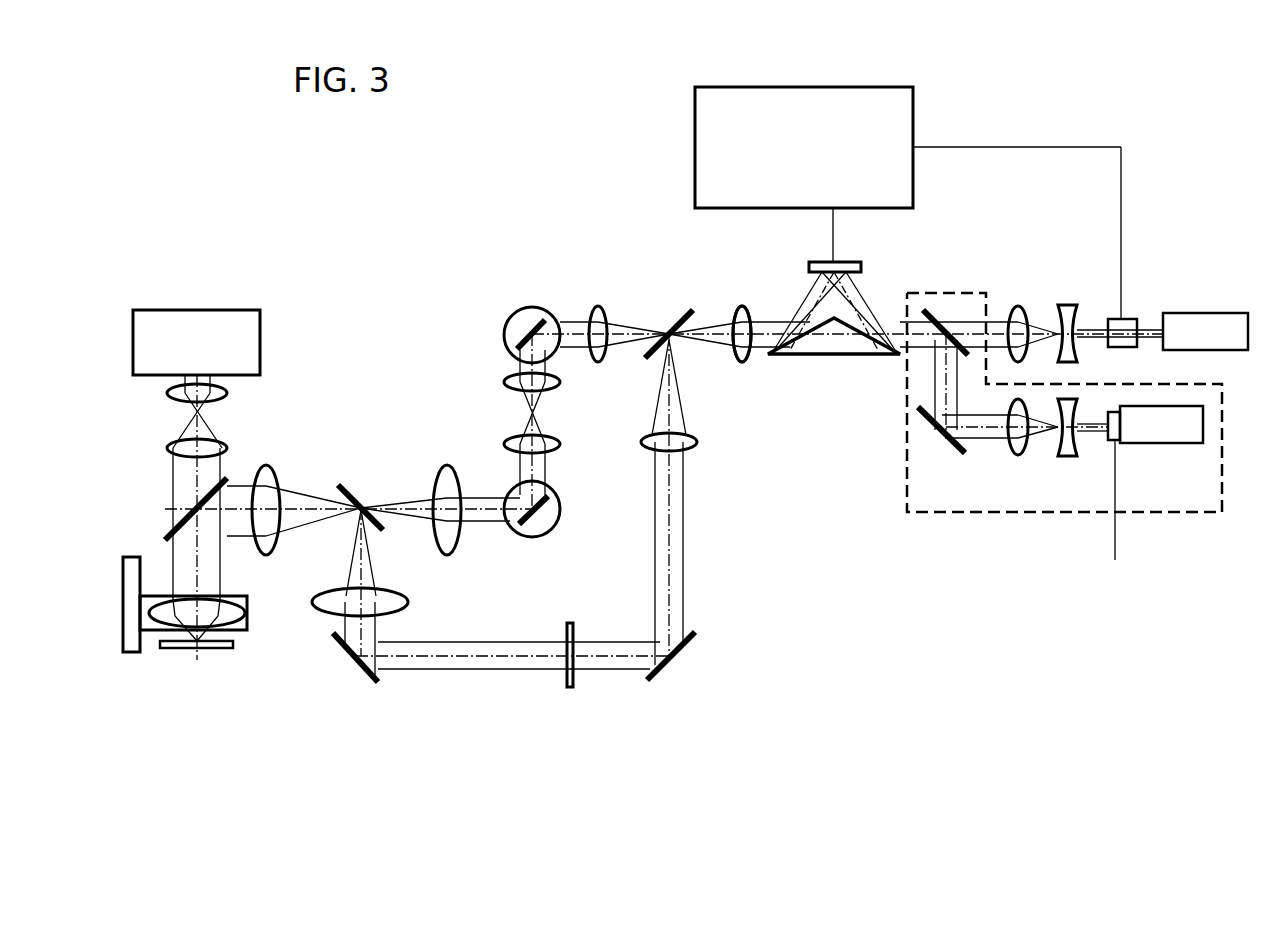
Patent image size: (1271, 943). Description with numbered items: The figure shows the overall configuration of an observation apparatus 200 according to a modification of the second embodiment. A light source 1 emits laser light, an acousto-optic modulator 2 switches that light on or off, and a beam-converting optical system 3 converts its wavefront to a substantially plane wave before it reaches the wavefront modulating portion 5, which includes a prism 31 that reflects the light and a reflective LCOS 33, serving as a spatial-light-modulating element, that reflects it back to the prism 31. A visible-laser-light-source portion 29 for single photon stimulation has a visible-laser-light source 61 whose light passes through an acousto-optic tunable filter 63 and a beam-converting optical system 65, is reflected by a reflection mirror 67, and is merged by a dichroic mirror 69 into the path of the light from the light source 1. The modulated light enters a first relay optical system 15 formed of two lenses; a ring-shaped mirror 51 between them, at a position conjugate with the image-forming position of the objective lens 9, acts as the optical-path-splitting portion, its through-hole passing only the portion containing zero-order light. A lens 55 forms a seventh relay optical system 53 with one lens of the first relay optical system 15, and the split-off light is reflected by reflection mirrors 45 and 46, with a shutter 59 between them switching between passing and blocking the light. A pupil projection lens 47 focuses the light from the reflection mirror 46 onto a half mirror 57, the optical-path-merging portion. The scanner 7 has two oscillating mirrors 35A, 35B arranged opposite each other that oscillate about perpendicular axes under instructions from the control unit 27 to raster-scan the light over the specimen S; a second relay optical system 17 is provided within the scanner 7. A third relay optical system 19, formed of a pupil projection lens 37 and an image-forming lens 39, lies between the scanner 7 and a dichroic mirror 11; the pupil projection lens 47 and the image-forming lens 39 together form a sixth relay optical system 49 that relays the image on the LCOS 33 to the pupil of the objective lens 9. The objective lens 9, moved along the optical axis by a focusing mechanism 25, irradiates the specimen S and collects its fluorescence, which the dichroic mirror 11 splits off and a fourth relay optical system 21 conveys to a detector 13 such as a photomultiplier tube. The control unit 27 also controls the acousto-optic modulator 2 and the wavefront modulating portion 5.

The laser microscope system 200 is at (986, 65).
The control unit 27 is at (803, 87).
The reflective liquid-crystal-on-silicon (LCOS) 33 is at (809, 266).
The prism 31 is at (873, 355).
The wavefront modulating portion 5 is at (832, 382).
The first relay optical system 15 is at (585, 300).
The seventh relay optical system 53 is at (757, 356).
The ring-shaped mirror 51 is at (664, 323).
The lens 55 is at (648, 450).
The reflection mirror 45 is at (681, 658).
The shutter 59 is at (575, 630).
The reflection mirror 46 is at (363, 672).
The pupil projection lens 47 is at (409, 603).
The sixth relay optical system 49 is at (247, 553).
The third relay optical system 19 is at (373, 493).
The image-forming lens 39 is at (280, 542).
The pupil projection lens 37 is at (434, 541).
The half mirror 57 is at (373, 496).
The dichroic mirror 11 is at (166, 531).
The detector 13 is at (195, 309).
The fourth relay optical system 21 is at (168, 382).
The objective lens 9 is at (242, 630).
The focusing mechanism 25 is at (129, 653).
The specimen S is at (222, 650).
The scanner 7 is at (536, 423).
The oscillating mirror 35A is at (535, 322).
The second relay optical system 17 is at (560, 370).
The oscillating mirror 35B is at (532, 536).
The visible-laser-light-source portion 29 is at (962, 514).
The dichroic mirror 69 is at (940, 308).
The reflection mirror 67 is at (935, 433).
The beam-converting optical system 3 is at (1085, 306).
The beam-converting optical system 65 is at (1085, 456).
The acousto-optic tunable filter (AOTF) 63 is at (1107, 438).
The visible-laser-light source 61 is at (1163, 447).
The acousto-optic modulator (AOM) 2 is at (1130, 318).
The light source 1 is at (1233, 352).